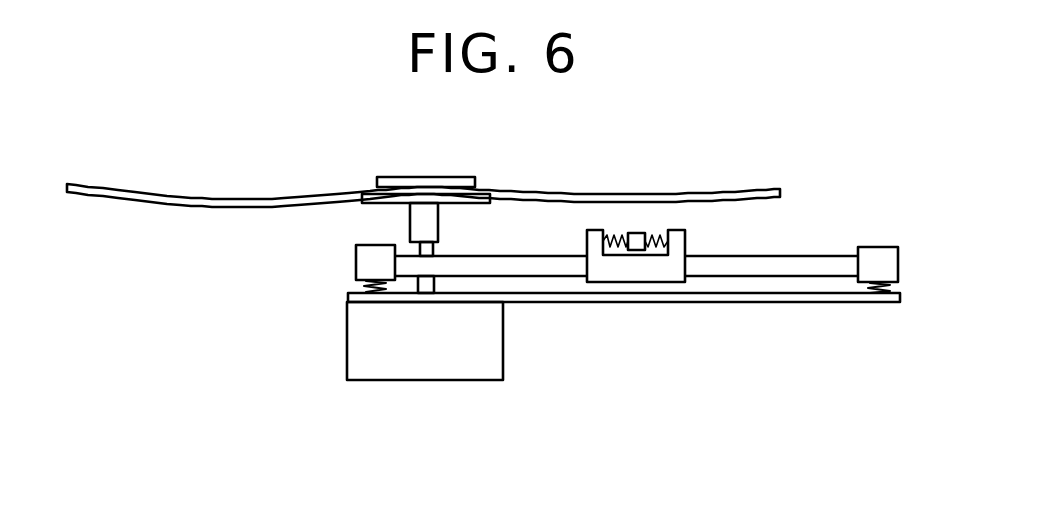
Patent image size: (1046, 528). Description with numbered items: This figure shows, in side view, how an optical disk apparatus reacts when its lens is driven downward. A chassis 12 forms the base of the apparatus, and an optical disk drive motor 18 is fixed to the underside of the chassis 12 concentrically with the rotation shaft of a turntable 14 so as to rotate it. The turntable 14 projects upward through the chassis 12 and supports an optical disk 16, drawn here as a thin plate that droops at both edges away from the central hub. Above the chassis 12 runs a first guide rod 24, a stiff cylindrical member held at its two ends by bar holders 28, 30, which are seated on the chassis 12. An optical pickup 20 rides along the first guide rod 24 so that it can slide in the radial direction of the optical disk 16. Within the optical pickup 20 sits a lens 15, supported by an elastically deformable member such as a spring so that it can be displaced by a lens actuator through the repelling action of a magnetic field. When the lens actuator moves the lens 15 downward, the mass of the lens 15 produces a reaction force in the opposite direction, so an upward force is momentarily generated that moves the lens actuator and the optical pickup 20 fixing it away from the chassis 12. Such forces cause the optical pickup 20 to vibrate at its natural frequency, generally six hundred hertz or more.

The chassis 12 is at (822, 298).
The turntable 14 is at (464, 204).
The lens 15 is at (637, 233).
The optical disk 16 is at (689, 197).
The optical disk drive motor 18 is at (417, 370).
The optical pickup 20 is at (646, 272).
The first guide rod 24 is at (790, 258).
The bar holder 28 is at (367, 262).
The bar holder 30 is at (878, 255).